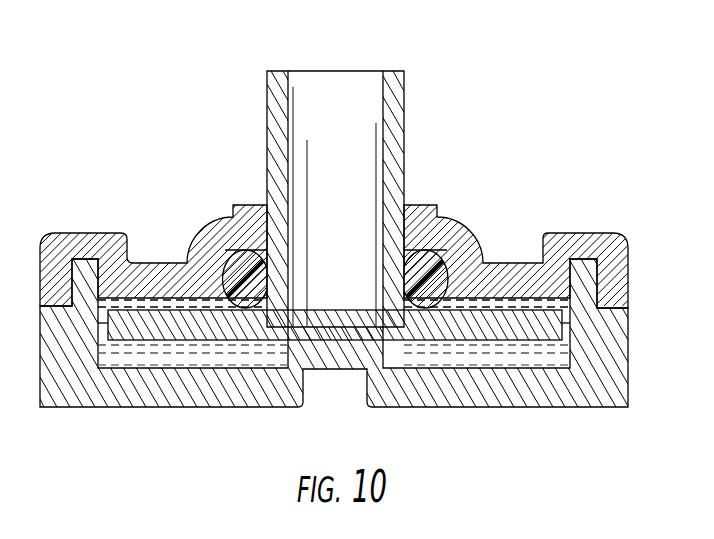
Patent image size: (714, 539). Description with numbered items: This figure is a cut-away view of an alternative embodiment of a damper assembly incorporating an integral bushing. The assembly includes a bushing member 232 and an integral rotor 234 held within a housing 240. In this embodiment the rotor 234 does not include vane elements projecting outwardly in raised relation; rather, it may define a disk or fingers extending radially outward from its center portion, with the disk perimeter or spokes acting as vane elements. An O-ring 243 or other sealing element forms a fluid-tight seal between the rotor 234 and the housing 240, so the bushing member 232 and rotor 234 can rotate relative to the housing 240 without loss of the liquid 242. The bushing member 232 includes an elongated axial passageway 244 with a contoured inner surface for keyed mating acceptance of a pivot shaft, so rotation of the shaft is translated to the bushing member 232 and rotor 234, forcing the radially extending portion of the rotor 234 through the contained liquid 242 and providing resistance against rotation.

The bushing member 232 is at (405, 113).
The rotor 234 is at (502, 313).
The housing 240 is at (630, 267).
The liquid 242 is at (535, 345).
The O-ring 243 is at (227, 257).
The elongated axial passageway 244 is at (323, 82).